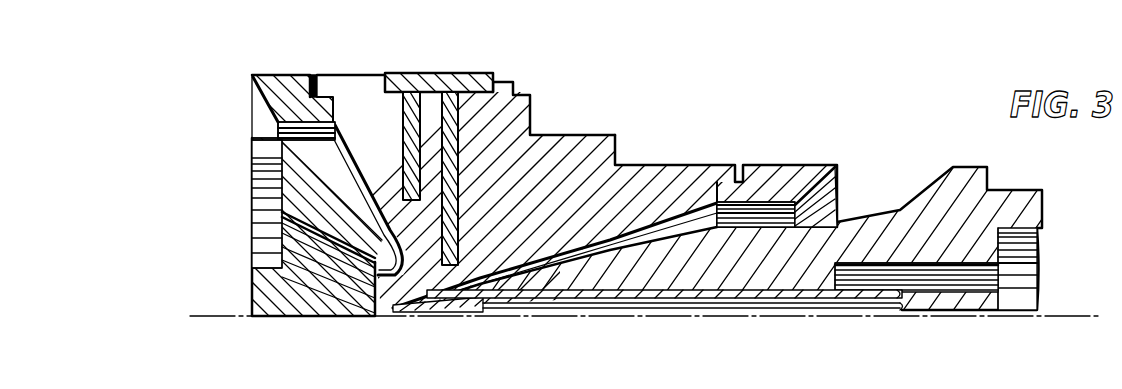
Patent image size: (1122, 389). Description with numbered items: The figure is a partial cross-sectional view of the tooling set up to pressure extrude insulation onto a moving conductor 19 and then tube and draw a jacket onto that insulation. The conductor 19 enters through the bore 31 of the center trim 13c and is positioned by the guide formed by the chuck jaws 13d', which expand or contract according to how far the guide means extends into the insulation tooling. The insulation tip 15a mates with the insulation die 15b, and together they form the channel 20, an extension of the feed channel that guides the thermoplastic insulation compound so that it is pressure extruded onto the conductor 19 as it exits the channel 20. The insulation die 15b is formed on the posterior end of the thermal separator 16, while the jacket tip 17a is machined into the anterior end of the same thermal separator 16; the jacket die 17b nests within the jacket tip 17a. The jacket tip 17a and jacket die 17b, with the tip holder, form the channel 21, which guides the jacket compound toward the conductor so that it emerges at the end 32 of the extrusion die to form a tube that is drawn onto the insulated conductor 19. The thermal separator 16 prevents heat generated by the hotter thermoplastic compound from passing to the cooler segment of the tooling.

The center trim 13c is at (585, 297).
The chuck jaws 13d' is at (438, 324).
The insulation tip 15a is at (811, 130).
The insulation die 15b is at (698, 163).
The thermal separator 16 is at (442, 73).
The jacket tip 17a is at (369, 73).
The jacket die 17b is at (296, 45).
The conductor 19 is at (1093, 312).
The channel 20 is at (837, 202).
The channel 21 is at (258, 113).
The bore 31 is at (833, 312).
The end of extrusion die 32 is at (367, 302).